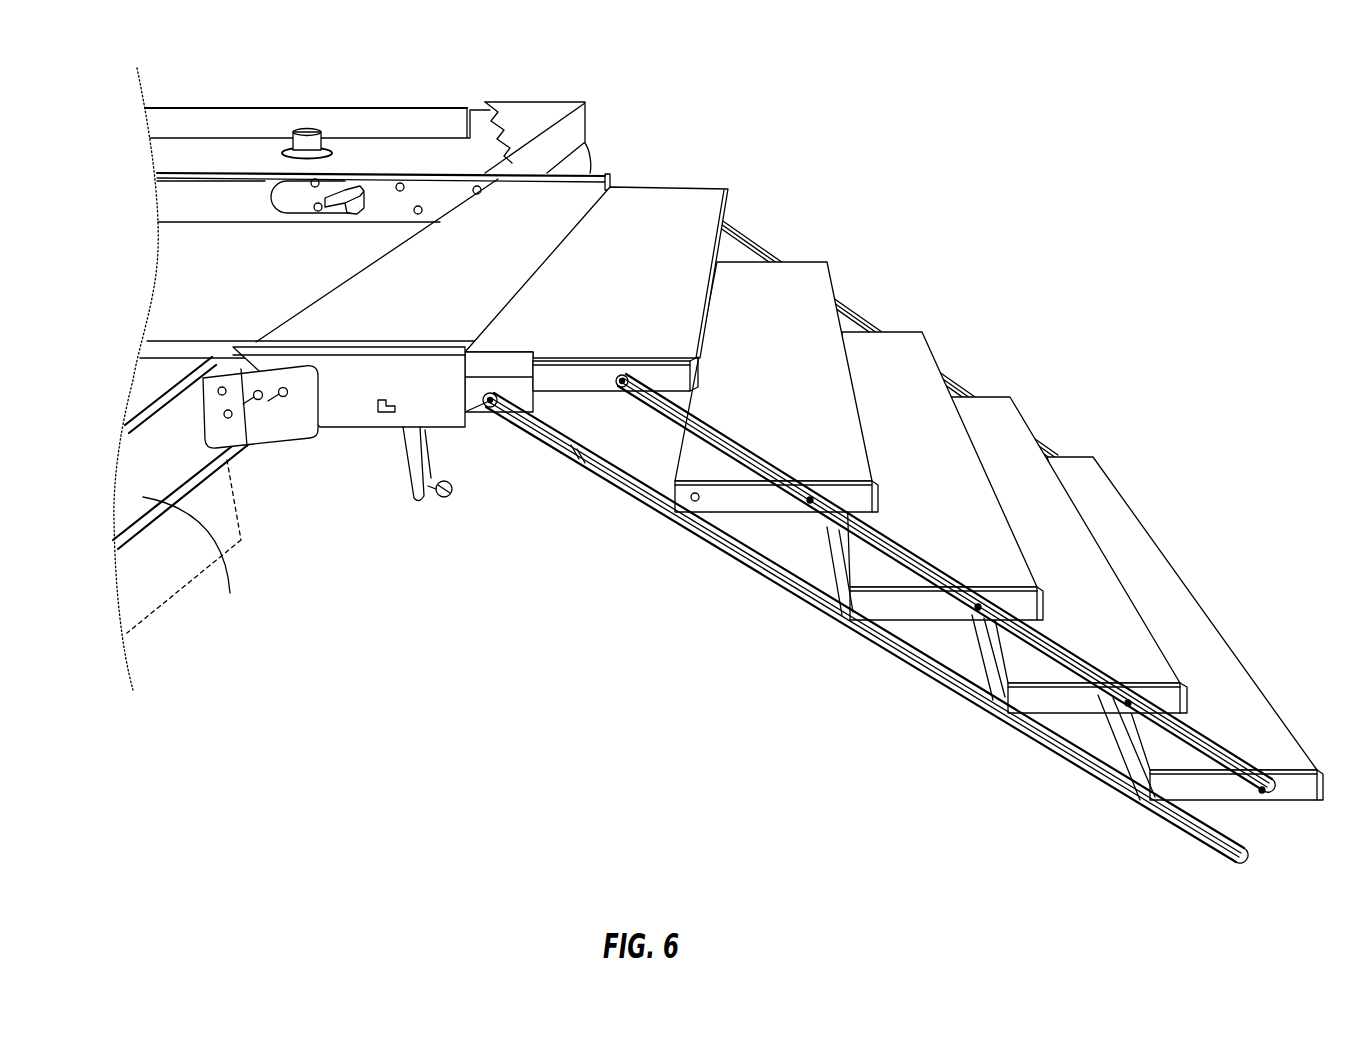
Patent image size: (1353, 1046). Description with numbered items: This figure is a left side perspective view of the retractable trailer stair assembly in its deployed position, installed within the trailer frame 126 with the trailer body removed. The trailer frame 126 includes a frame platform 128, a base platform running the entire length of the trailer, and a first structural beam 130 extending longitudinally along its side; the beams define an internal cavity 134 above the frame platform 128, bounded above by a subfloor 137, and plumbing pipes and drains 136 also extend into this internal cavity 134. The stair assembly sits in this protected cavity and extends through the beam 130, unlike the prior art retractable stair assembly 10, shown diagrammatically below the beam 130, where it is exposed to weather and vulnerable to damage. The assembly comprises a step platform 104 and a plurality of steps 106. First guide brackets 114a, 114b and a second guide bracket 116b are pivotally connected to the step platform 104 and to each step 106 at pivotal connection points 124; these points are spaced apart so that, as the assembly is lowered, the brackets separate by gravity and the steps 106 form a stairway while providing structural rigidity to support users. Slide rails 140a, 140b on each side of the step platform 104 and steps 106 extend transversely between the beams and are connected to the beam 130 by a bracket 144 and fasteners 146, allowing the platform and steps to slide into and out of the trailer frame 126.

The prior art retractable stair assembly 10 is at (248, 540).
The step platform 104 is at (684, 203).
The steps 106 is at (795, 272).
The first guide bracket 114a is at (738, 222).
The first guide bracket 114b is at (746, 458).
The second guide bracket 116b is at (568, 456).
The pivotal connection points 124 is at (620, 376).
The trailer frame 126 is at (297, 92).
The frame platform 128 is at (236, 263).
The first structural beam 130 is at (197, 563).
The internal cavity 134 is at (181, 327).
The plumbing pipes and drains 136 is at (302, 135).
The subfloor 137 is at (557, 103).
The slide rail 140a is at (381, 381).
The slide rail 140b is at (585, 172).
The bracket 144 is at (273, 420).
The fasteners 146 is at (282, 386).